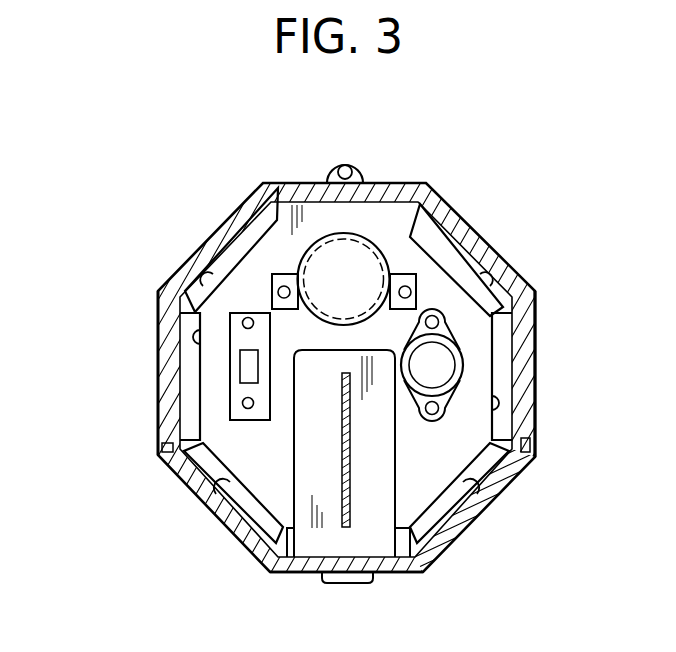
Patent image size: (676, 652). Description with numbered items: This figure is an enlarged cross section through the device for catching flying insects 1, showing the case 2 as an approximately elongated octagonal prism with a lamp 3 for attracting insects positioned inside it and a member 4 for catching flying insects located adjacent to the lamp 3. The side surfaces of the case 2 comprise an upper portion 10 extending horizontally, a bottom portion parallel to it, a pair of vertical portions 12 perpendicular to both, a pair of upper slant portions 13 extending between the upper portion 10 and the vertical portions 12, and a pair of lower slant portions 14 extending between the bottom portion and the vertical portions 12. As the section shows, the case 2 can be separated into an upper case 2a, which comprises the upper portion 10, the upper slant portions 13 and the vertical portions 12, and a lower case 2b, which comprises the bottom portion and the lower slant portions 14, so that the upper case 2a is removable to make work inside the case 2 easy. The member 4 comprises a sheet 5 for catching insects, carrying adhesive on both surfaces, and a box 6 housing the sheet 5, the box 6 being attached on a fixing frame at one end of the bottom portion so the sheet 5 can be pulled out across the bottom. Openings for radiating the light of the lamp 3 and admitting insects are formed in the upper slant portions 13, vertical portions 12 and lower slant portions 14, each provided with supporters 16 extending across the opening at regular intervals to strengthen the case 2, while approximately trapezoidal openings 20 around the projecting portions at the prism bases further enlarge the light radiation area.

The device for catching flying insects 1 is at (404, 178).
The case 2 is at (273, 178).
The upper case 2a is at (538, 315).
The lower case 2b is at (443, 565).
The lamp 3 is at (378, 240).
The member for catching flying insects 4 is at (328, 471).
The sheet for catching insects 5 is at (396, 483).
The box 6 is at (471, 522).
The upper portion 10 is at (309, 181).
The vertical portions 12 is at (537, 356).
The upper slant portions 13 is at (483, 243).
The lower slant portions 14 is at (343, 455).
The supporter 16 is at (460, 237).
The trapezoidal openings 20 is at (487, 281).